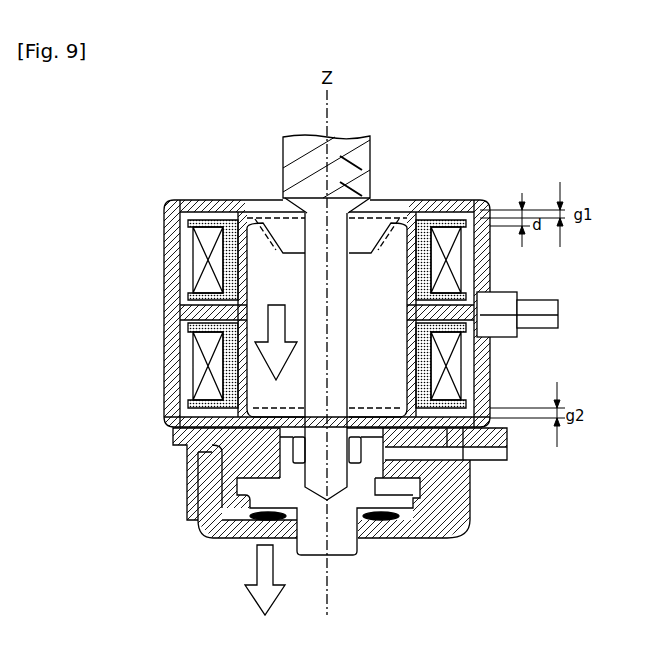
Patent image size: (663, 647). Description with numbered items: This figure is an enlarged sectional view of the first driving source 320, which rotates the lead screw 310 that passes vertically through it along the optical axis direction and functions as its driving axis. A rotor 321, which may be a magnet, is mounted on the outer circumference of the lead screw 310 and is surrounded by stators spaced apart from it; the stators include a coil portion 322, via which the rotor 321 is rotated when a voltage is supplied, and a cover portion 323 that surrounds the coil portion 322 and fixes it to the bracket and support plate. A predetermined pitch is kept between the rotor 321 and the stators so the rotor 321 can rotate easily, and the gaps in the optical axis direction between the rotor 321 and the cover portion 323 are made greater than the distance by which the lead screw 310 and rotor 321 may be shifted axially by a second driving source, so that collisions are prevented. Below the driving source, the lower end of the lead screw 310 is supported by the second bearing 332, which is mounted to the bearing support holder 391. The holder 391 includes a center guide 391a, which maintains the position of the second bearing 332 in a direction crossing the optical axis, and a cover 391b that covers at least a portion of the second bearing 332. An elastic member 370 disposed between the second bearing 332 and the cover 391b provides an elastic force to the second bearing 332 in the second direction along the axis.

The lead screw 310 is at (337, 362).
The first driving source 320 is at (73, 202).
The rotor 321 is at (172, 308).
The coil portion 322 is at (202, 258).
The cover portion 323 is at (190, 220).
The second bearing 332 is at (305, 558).
The elastic member 370 is at (383, 520).
The bearing support holder 391 is at (90, 453).
The center guide 391a is at (203, 452).
The cover 391b is at (203, 493).